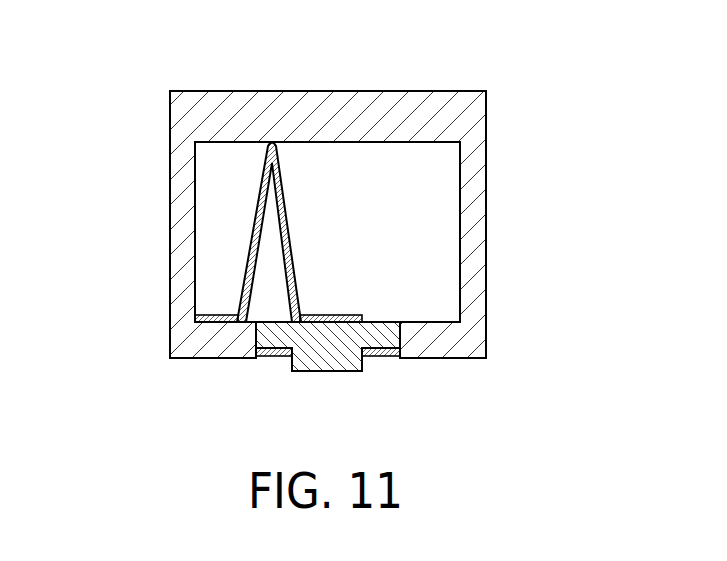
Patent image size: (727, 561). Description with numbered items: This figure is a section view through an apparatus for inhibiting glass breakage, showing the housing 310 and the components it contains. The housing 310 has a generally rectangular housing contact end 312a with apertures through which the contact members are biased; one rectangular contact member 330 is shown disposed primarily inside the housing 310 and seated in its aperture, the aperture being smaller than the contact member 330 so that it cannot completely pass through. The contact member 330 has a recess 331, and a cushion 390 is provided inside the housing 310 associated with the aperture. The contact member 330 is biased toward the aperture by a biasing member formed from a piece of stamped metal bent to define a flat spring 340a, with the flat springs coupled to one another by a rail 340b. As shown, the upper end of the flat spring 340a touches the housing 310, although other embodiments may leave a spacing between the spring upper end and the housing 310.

The housing 310 is at (509, 161).
The housing contact end 312a is at (476, 376).
The contact member 330 is at (335, 388).
The recess 331 is at (281, 374).
The cushion 390 is at (262, 357).
The flat spring 340a is at (236, 177).
The rail 340b is at (212, 297).